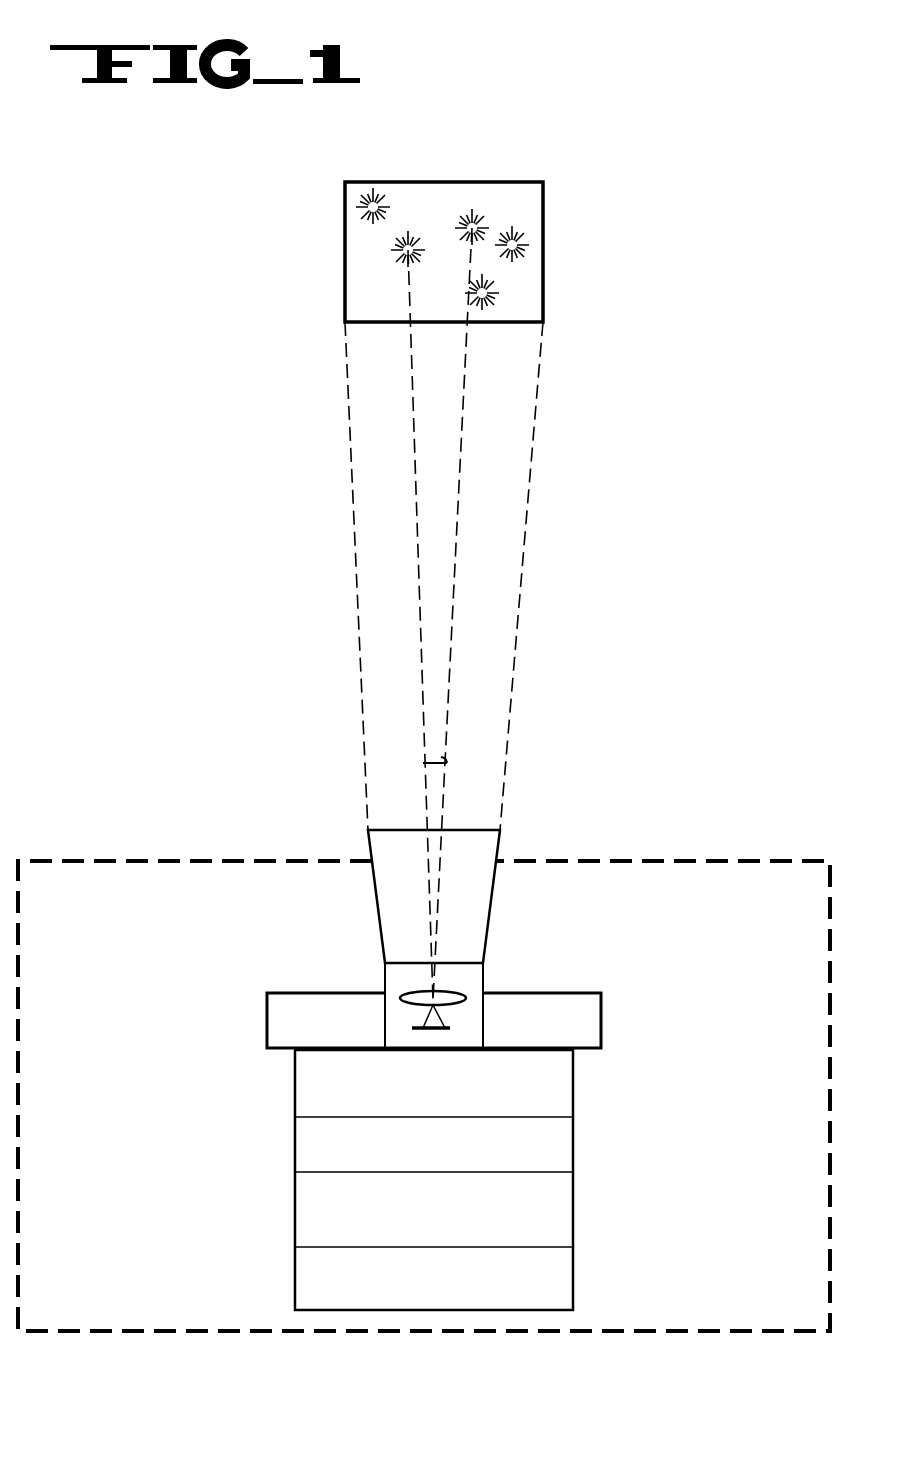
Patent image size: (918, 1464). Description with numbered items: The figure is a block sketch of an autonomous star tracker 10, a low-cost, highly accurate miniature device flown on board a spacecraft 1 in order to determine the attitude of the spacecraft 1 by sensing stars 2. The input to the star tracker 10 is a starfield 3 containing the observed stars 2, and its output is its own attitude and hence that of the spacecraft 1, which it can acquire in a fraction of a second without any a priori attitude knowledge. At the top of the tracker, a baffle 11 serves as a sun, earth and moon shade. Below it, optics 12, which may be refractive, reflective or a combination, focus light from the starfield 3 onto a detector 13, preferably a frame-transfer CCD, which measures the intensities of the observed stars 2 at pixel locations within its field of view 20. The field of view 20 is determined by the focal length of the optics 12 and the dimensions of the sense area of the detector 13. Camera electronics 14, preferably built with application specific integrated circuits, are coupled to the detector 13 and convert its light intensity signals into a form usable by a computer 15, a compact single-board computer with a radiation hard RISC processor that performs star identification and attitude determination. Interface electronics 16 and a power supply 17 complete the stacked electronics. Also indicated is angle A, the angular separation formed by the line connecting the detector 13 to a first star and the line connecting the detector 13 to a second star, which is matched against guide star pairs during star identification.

The spacecraft 1 is at (424, 1096).
The stars 2 is at (512, 217).
The starfield 3 is at (545, 307).
The autonomous star tracker 10 is at (589, 1172).
The baffle 11 is at (498, 918).
The optics 12 is at (467, 1000).
The detector 13 is at (411, 1025).
The camera electronics 14 is at (312, 1082).
The computer 15 is at (312, 1145).
The interface electronics 16 is at (311, 1197).
The power supply 17 is at (311, 1272).
The field of view 20 is at (540, 422).
The angle A is at (443, 761).